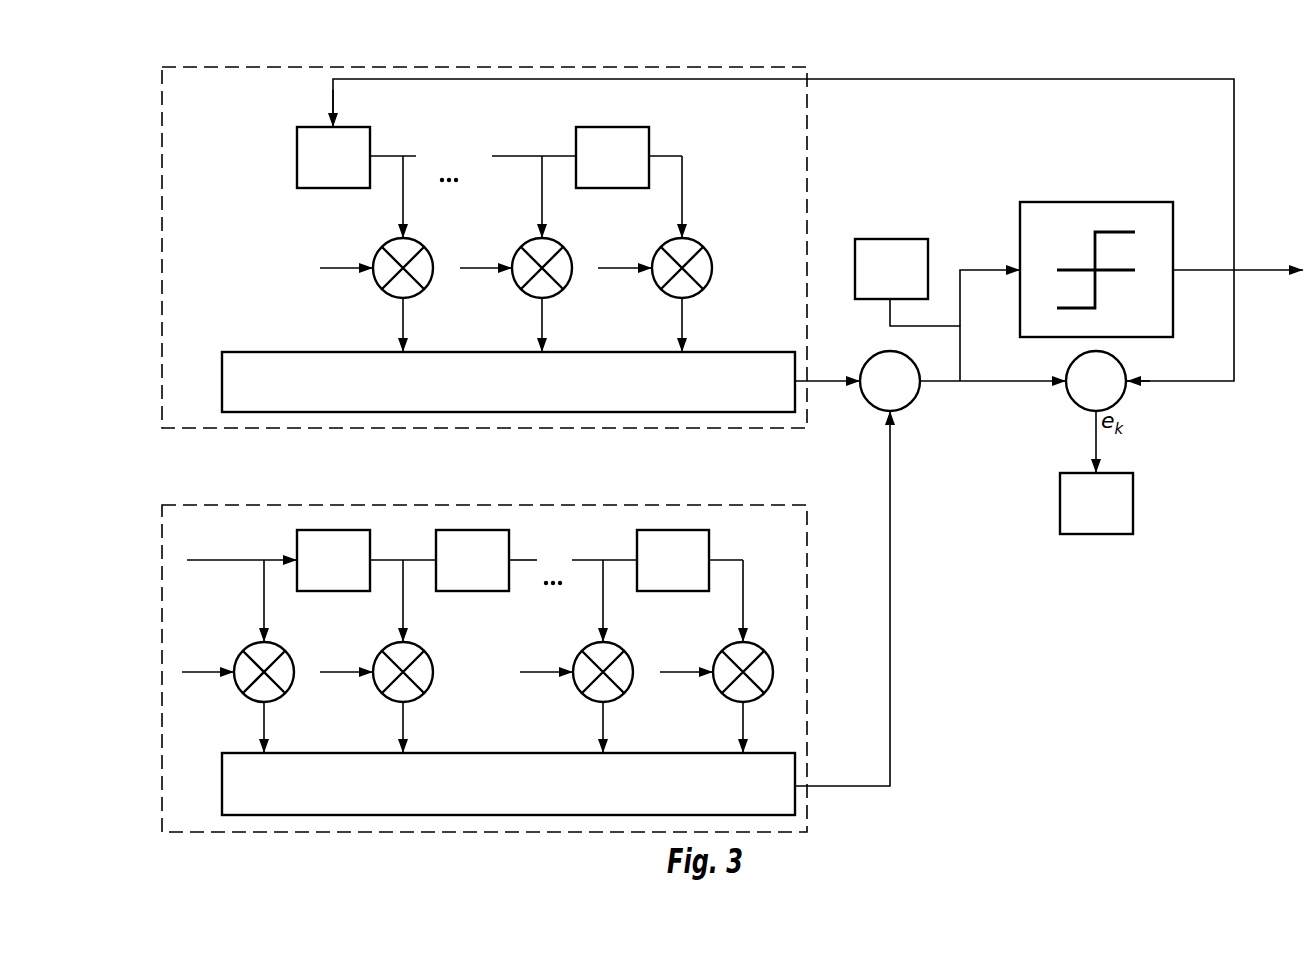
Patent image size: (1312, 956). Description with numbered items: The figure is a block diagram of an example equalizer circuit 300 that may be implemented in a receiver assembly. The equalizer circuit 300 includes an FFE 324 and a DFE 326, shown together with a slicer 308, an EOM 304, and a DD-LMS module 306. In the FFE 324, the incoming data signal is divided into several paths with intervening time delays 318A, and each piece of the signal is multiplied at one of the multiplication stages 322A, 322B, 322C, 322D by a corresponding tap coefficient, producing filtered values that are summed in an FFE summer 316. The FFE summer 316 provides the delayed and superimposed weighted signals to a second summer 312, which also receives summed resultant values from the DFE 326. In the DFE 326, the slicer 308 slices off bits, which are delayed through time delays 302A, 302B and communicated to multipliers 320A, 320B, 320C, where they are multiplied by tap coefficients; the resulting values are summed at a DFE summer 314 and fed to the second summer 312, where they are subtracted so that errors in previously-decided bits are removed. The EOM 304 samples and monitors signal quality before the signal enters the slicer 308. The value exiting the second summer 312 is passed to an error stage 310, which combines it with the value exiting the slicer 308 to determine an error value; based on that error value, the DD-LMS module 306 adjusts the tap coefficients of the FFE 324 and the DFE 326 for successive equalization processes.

The equalizer circuit 300 is at (176, 44).
The DFE 326 is at (209, 98).
The FFE 324 is at (209, 531).
The time delay 302A is at (355, 167).
The time delay 302B is at (634, 167).
The multiplier 320A is at (378, 287).
The multiplier 320B is at (517, 287).
The multiplier 320C is at (657, 287).
The DFE summer 314 is at (523, 392).
The EOM 304 is at (907, 280).
The slicer 308 is at (1058, 229).
The second summer 312 is at (913, 397).
The error stage 310 is at (1120, 397).
The DD-LMS module 306 is at (1112, 514).
The time delay 318A is at (355, 571).
The multiplication stage 322A is at (238, 690).
The multiplication stage 322B is at (378, 690).
The multiplication stage 322C is at (578, 690).
The multiplication stage 322D is at (718, 690).
The FFE summer 316 is at (523, 794).